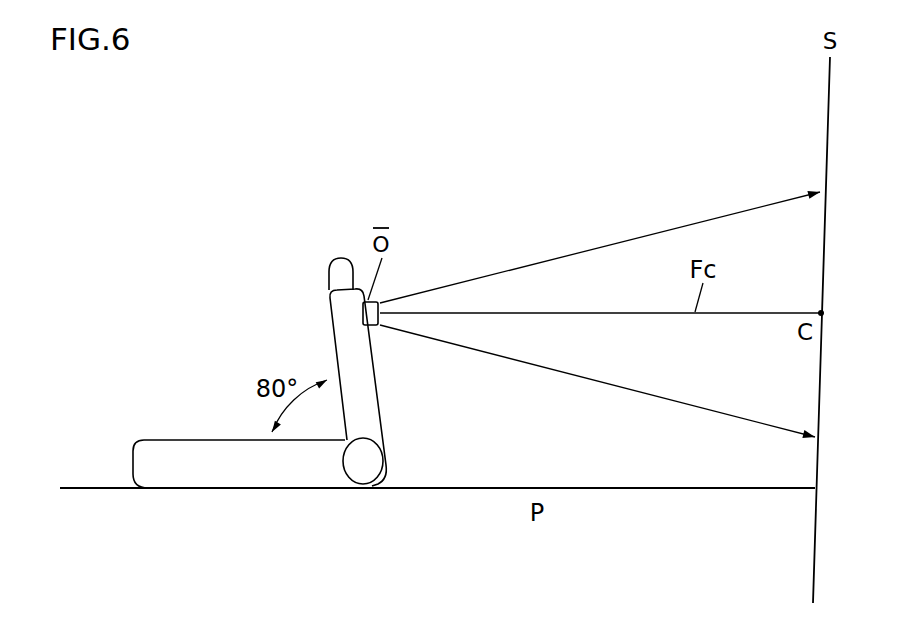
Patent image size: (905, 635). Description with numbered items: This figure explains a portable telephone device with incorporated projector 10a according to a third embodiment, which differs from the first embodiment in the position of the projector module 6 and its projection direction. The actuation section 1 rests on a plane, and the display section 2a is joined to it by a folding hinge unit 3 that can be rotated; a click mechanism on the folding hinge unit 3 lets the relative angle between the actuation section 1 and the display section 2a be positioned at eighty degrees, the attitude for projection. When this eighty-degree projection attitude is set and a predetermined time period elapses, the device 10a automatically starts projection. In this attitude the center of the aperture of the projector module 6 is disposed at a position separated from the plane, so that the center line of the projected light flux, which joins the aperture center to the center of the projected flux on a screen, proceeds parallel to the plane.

The portable telephone device with incorporated projector 10a is at (163, 400).
The actuation section 1 is at (208, 475).
The display section 2a is at (342, 320).
The folding hinge unit 3 is at (360, 475).
The projector module 6 is at (377, 326).